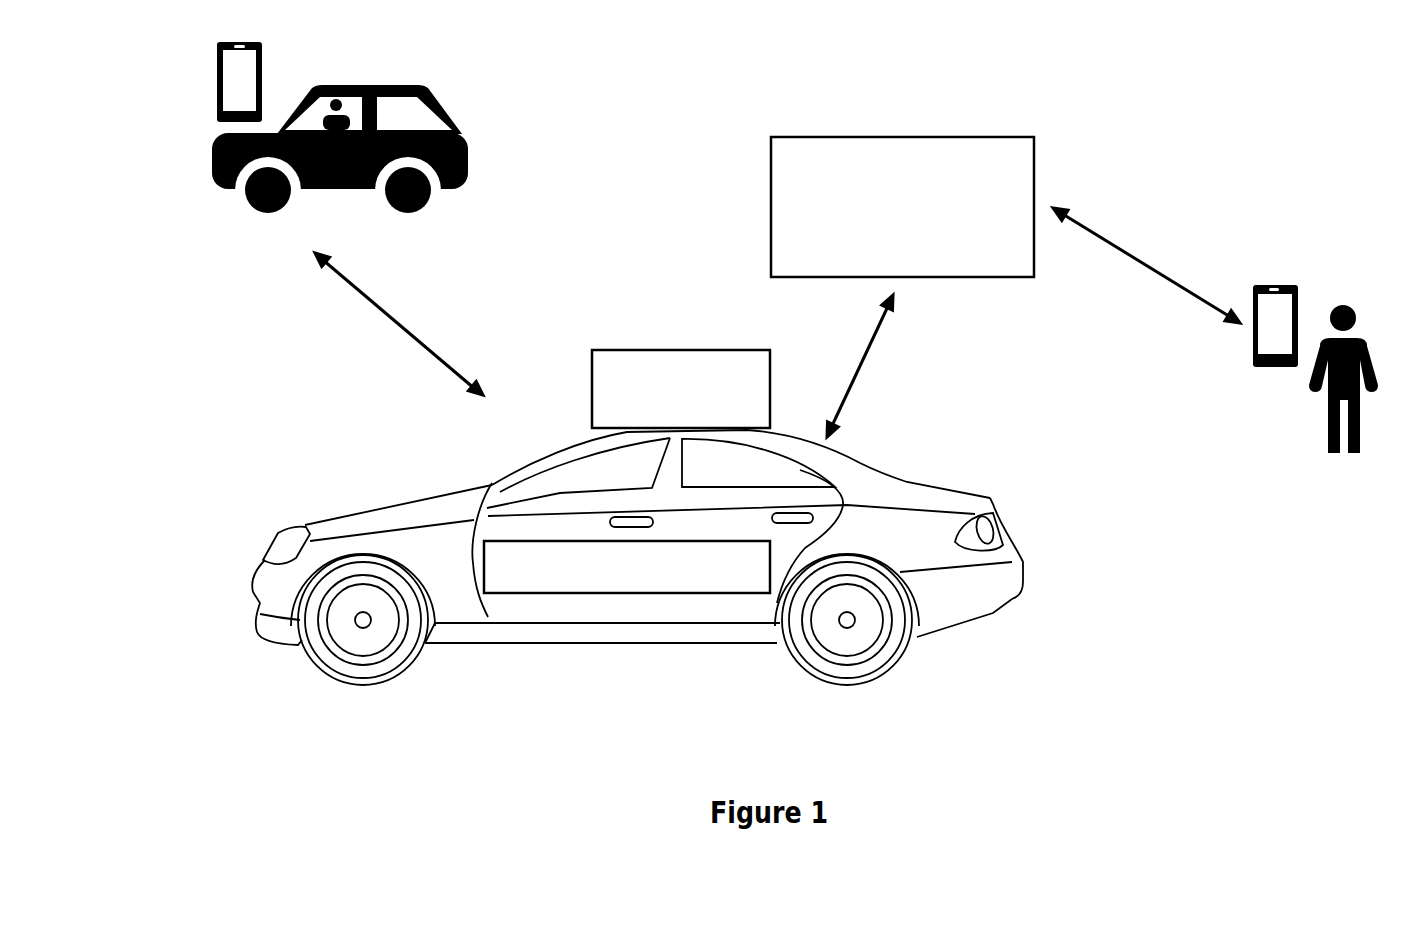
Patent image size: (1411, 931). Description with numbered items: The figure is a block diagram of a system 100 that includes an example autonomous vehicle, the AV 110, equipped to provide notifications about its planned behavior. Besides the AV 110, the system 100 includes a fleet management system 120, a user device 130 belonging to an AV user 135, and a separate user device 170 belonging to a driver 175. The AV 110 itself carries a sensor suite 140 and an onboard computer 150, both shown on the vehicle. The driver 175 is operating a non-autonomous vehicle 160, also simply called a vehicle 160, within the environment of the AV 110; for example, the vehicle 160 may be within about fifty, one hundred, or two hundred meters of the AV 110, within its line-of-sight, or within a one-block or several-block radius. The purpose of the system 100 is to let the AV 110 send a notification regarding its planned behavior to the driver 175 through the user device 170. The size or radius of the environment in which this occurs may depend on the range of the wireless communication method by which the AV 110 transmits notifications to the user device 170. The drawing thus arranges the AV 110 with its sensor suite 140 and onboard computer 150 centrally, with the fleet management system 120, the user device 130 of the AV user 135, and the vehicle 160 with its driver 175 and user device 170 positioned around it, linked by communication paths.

The system 100 is at (757, 72).
The AV 110 is at (961, 597).
The fleet management system 120 is at (884, 249).
The user device 130 is at (1250, 343).
The AV user 135 is at (1307, 412).
The sensor suite 140 is at (699, 416).
The onboard computer 150 is at (747, 581).
The non-autonomous vehicle 160 is at (216, 244).
The user device 170 is at (212, 73).
The driver 175 is at (347, 107).